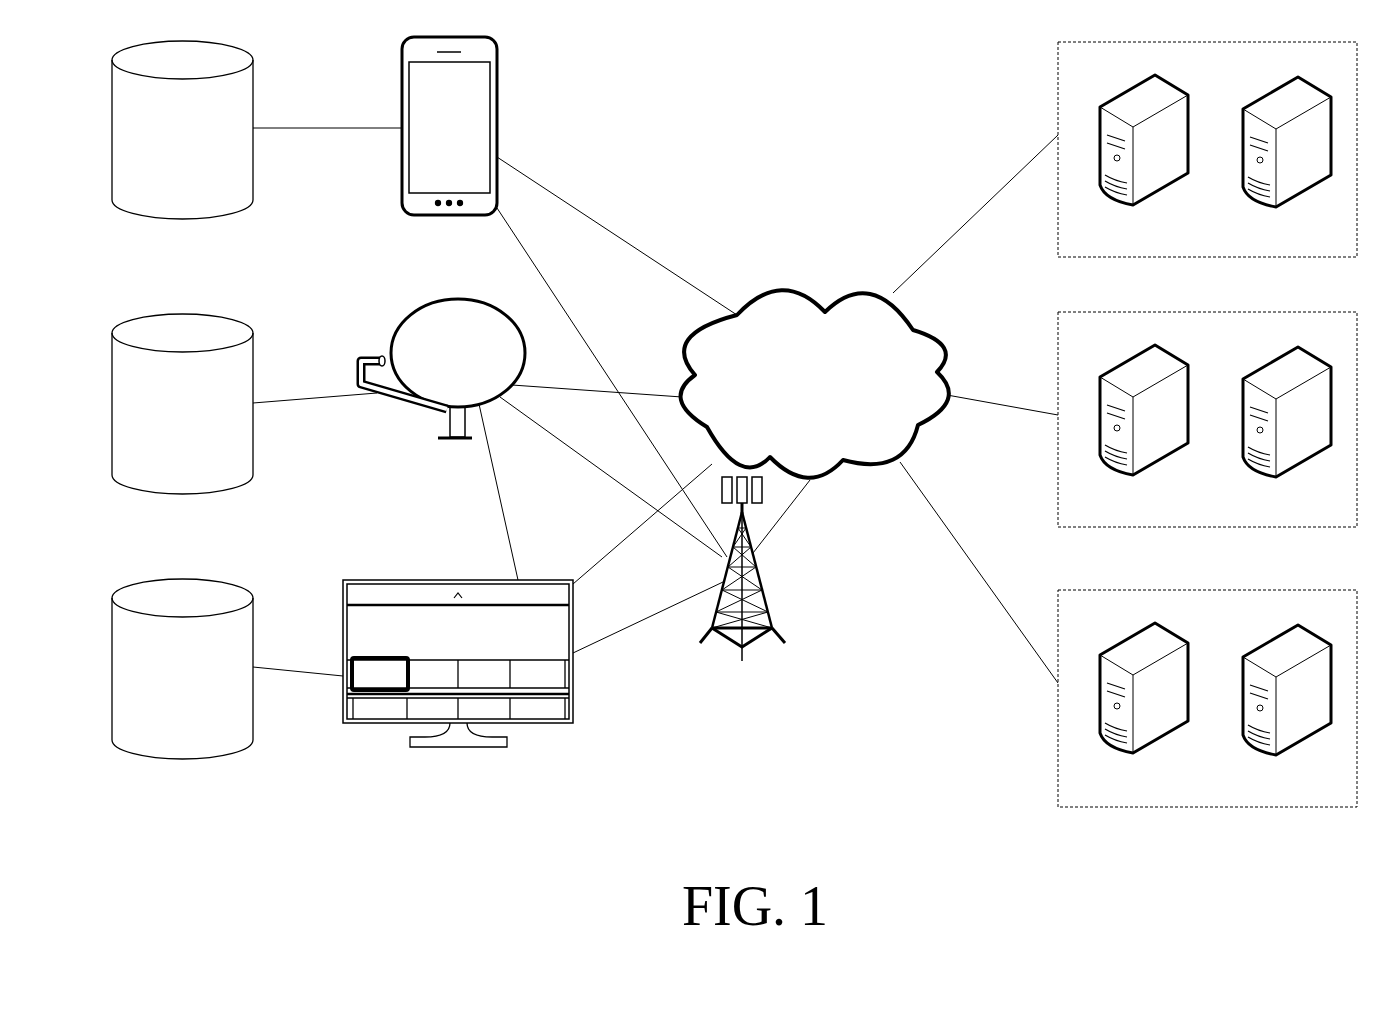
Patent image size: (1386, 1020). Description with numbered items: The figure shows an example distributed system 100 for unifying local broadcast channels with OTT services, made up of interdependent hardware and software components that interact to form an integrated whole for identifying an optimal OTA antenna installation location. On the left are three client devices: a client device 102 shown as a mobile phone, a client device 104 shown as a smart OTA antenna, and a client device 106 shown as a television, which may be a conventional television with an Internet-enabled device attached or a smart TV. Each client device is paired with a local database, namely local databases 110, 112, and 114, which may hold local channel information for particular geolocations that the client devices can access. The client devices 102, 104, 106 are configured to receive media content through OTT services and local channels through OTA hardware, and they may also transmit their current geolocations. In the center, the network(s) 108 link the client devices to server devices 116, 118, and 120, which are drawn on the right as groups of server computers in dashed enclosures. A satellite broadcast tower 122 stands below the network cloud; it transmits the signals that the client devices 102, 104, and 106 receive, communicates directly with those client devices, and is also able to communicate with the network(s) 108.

The system 100 is at (875, 53).
The client device 102 is at (467, 147).
The client device 104 is at (468, 500).
The client device 106 is at (480, 774).
The network(s) 108 is at (833, 424).
The local database 110 is at (200, 141).
The local database 112 is at (200, 415).
The local database 114 is at (200, 679).
The server device 116 is at (1226, 245).
The server device 118 is at (1226, 514).
The server device 120 is at (1226, 792).
The satellite broadcast tower 122 is at (760, 710).